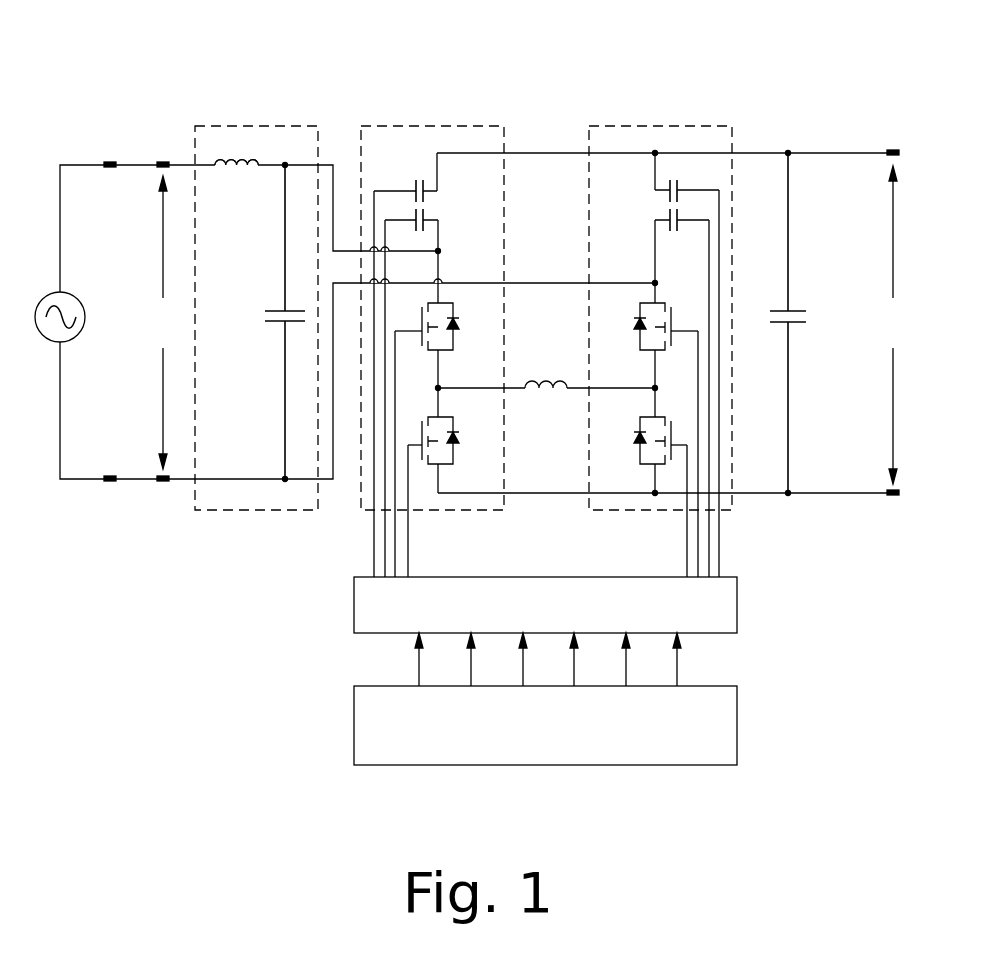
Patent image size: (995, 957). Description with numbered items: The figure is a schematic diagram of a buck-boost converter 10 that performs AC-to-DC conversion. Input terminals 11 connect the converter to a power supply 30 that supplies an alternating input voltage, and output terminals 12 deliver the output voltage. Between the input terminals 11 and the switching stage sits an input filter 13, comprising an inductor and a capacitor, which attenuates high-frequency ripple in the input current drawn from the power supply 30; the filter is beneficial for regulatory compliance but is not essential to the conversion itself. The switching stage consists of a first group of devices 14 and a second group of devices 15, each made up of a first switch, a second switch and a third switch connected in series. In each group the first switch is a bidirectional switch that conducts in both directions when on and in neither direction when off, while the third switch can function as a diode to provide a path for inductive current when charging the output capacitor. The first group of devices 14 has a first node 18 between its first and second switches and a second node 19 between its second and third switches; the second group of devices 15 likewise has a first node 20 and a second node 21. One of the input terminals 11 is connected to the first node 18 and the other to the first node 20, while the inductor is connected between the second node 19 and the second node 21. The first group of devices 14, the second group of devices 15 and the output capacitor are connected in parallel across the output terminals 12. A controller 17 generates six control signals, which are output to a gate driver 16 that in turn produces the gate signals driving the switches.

The buck-boost converter 10 is at (778, 61).
The input terminals 11 is at (163, 160).
The output terminals 12 is at (893, 150).
The input filter 13 is at (255, 125).
The first group of devices 14 is at (424, 125).
The second group of devices 15 is at (667, 125).
The gate driver 16 is at (737, 604).
The controller 17 is at (737, 727).
The first node 18 is at (437, 253).
The second node 19 is at (437, 390).
The first node 20 is at (657, 281).
The second node 21 is at (657, 390).
The power supply 30 is at (43, 340).